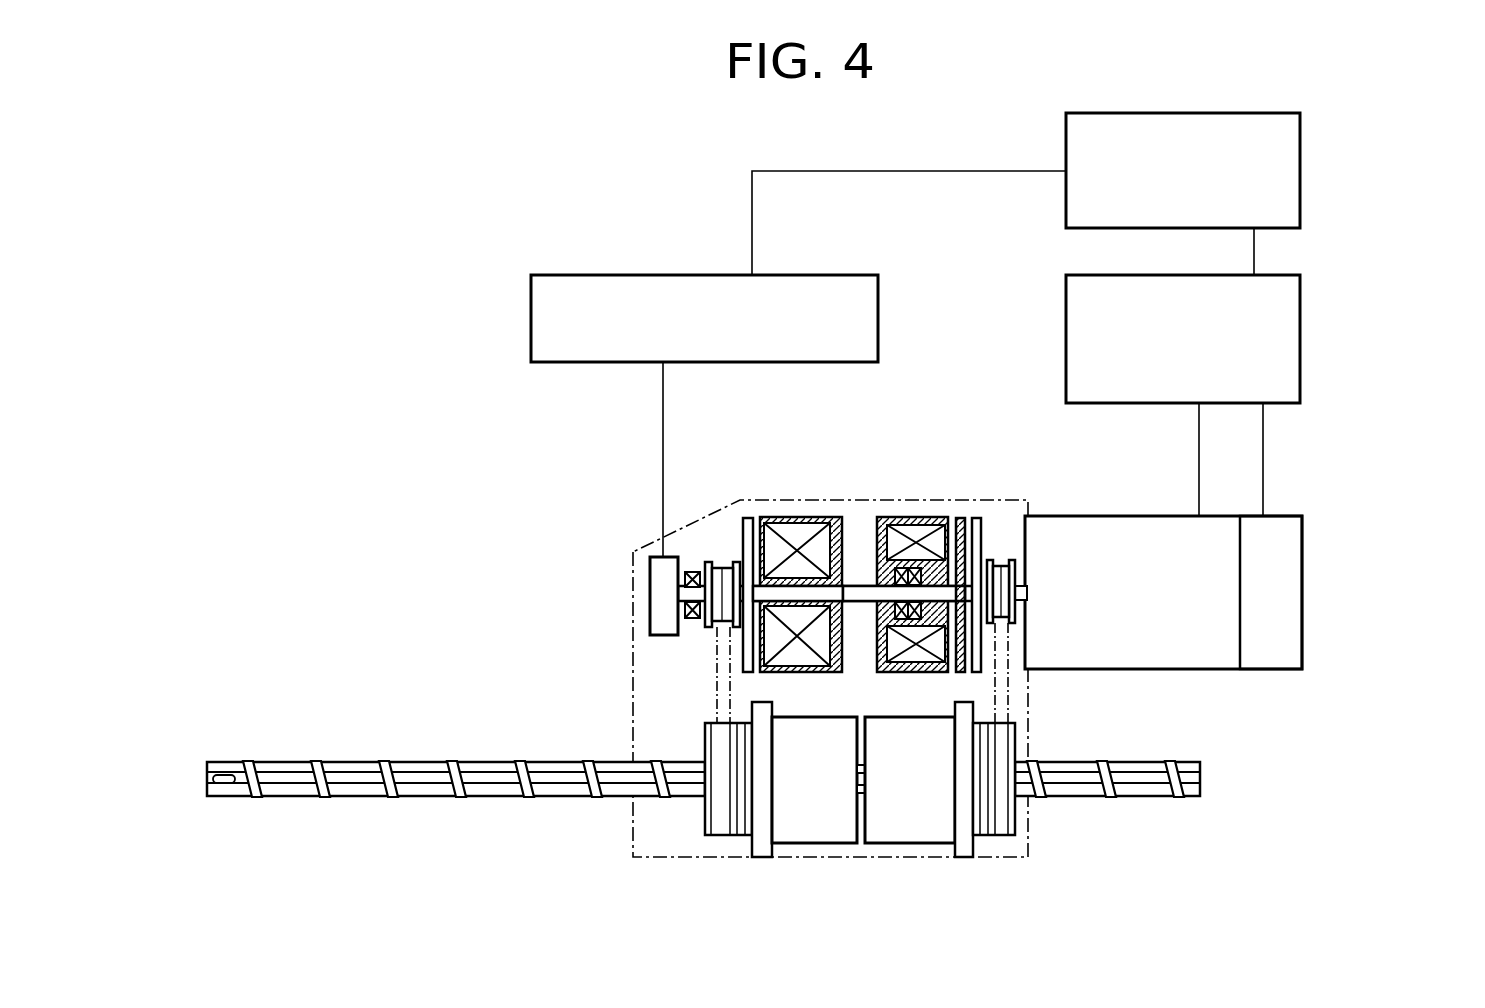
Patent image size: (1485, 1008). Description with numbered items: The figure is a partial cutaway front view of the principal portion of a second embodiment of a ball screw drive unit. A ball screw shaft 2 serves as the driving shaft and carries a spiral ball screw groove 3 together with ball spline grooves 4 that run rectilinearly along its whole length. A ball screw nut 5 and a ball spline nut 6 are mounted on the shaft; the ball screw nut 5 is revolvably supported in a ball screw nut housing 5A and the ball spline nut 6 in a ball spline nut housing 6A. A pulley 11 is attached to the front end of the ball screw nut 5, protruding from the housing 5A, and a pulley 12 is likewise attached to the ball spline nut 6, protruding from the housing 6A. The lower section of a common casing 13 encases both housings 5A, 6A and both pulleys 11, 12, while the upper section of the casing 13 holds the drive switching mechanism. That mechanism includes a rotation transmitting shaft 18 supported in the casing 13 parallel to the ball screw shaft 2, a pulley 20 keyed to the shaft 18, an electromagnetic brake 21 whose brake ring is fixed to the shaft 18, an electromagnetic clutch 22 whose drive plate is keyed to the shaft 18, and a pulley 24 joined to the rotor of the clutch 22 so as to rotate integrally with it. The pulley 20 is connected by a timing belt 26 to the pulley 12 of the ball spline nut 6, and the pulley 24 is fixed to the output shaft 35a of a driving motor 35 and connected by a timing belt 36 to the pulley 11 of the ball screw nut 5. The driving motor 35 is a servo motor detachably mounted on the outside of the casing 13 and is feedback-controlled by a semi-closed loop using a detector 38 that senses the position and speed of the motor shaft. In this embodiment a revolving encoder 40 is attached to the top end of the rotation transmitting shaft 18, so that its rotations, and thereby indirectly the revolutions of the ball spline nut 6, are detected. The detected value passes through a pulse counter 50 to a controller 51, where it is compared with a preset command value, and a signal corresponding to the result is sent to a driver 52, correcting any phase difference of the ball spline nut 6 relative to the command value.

The ball screw shaft 2 is at (703, 778).
The ball screw groove 3 is at (383, 797).
The ball spline grooves 4 is at (481, 775).
The ball screw nut 5 is at (925, 807).
The ball screw nut housing 5A is at (906, 843).
The ball spline nut 6 is at (804, 809).
The ball spline nut housing 6A is at (808, 843).
The pulley 11 is at (1004, 837).
The pulley 12 is at (728, 837).
The casing 13 is at (633, 812).
The rotation transmitting shaft 18 is at (694, 570).
The pulley 20 is at (724, 562).
The electromagnetic brake 21 is at (820, 515).
The electromagnetic clutch 22 is at (972, 478).
The pulley 24 is at (1000, 560).
The timing belt 26 is at (722, 660).
The driving motor 35 is at (1118, 524).
The output shaft 35a is at (1025, 592).
The timing belt 36 is at (1003, 718).
The detector 38 is at (1278, 578).
The revolving encoder 40 is at (650, 600).
The pulse counter 50 is at (531, 322).
The controller 51 is at (1066, 133).
The driver 52 is at (1066, 337).